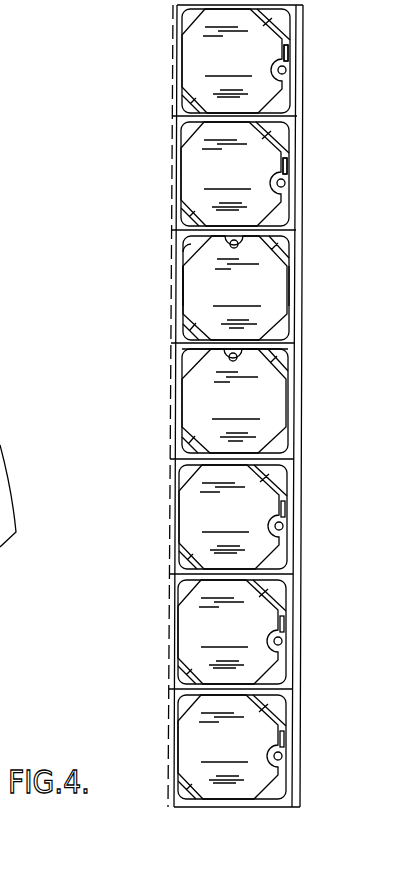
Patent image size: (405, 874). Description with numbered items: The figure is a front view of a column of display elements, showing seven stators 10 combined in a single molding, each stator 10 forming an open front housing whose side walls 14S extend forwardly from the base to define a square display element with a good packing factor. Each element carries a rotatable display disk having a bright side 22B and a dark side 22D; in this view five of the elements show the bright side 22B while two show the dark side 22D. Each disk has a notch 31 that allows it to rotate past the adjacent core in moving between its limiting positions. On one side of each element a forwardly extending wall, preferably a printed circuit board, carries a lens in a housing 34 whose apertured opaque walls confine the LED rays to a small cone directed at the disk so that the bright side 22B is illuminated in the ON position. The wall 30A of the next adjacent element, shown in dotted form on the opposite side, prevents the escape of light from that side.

The stator 10 is at (160, 58).
The bright side 22B is at (234, 404).
The dark side 22D is at (235, 344).
The notch 31 is at (284, 60).
The housing 34 is at (287, 168).
The side walls 14S is at (180, 298).
The wall 30A is at (177, 402).